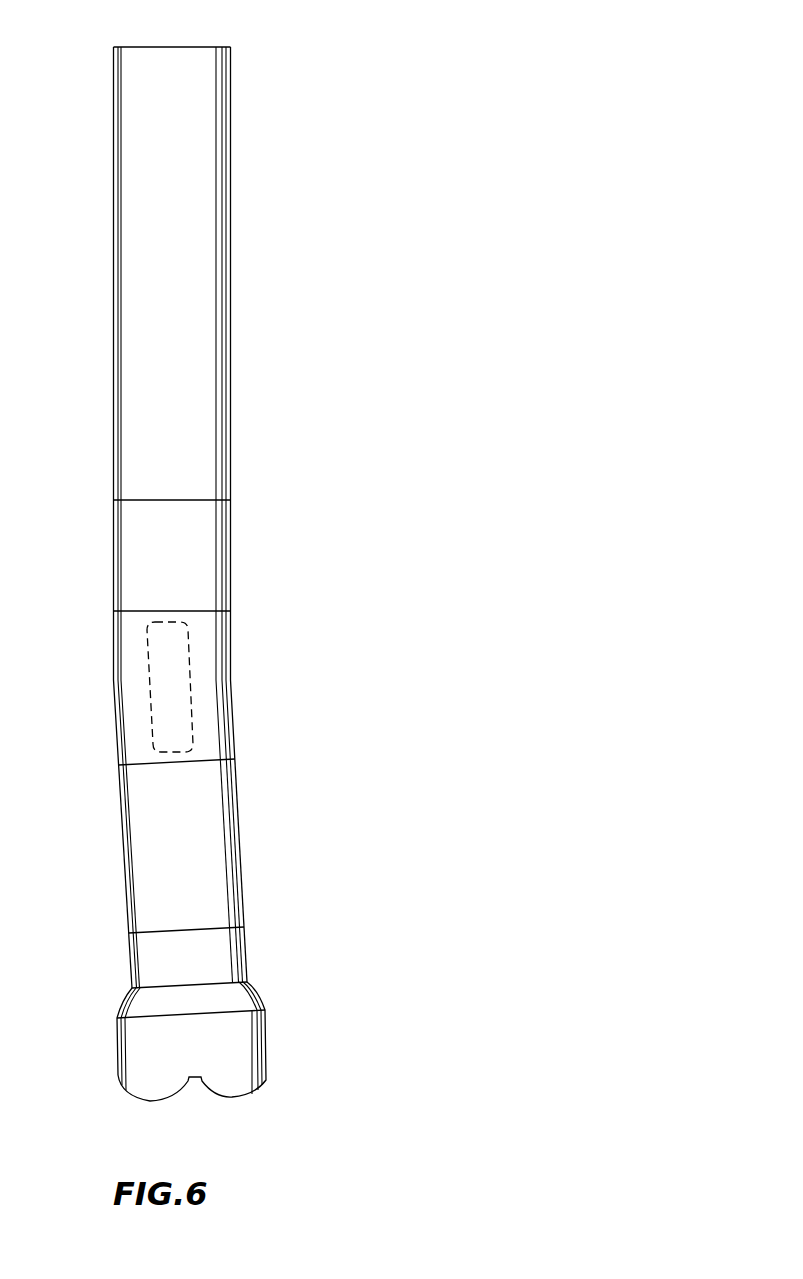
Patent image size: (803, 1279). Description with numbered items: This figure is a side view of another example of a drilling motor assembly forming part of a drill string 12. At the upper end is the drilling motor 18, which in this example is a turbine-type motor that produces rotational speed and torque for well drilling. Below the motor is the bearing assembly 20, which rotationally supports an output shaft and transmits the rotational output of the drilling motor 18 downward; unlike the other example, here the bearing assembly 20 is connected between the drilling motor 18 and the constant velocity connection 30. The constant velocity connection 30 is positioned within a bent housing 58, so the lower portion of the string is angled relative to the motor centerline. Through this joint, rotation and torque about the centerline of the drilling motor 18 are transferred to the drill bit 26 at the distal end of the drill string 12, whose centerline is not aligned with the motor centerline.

The drill string 12 is at (383, 130).
The drilling motor 18 is at (231, 217).
The bearing assembly 20 is at (231, 520).
The bent housing 58 is at (113, 663).
The constant velocity connection 30 is at (188, 652).
The drill bit 26 is at (266, 1032).